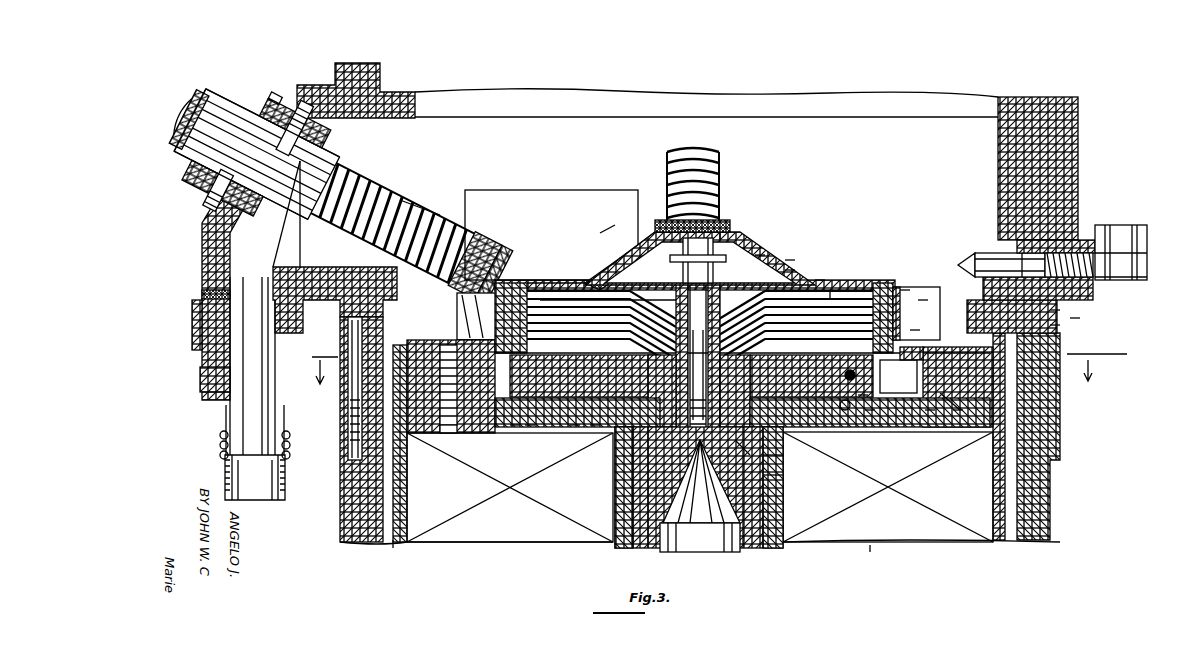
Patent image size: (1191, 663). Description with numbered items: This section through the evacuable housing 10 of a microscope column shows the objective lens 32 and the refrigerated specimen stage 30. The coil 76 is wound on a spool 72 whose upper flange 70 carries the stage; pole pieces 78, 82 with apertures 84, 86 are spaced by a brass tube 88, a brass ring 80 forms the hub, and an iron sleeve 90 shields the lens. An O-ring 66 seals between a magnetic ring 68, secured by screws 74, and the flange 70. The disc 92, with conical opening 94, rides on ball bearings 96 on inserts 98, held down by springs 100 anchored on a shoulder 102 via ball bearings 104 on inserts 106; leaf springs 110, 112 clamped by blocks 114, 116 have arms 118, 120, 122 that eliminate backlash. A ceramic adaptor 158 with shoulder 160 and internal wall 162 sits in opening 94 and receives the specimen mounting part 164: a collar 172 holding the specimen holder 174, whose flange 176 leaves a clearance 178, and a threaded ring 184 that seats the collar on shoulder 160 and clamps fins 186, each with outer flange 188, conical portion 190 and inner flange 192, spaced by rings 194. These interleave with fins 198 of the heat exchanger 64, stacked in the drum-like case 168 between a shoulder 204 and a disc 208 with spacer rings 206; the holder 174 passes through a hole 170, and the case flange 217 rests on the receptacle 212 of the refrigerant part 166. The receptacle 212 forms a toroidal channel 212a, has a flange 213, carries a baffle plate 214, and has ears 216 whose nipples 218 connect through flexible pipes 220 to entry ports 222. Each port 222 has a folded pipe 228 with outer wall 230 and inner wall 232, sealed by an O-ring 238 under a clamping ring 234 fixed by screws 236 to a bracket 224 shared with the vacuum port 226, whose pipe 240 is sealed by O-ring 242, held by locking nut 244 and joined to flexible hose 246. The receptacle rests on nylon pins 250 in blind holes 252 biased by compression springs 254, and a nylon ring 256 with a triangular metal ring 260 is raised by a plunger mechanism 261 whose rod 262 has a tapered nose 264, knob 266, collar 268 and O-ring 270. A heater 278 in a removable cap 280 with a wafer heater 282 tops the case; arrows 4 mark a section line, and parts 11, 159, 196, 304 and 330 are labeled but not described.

The evacuable housing 10 is at (340, 524).
The housing wall block 11 is at (1078, 120).
The specimen stage 30 is at (935, 144).
The objective lens 32 is at (888, 487).
The section line 4 is at (719, 380).
The heat exchanger 64 is at (870, 235).
The O-ring 66 is at (1060, 325).
The ring of magnetic material 68 is at (1080, 318).
The upper flange 70 is at (575, 430).
The spool 72 is at (783, 508).
The screws 74 is at (350, 452).
The coil 76 is at (872, 548).
The objective lens pole piece 78 is at (700, 537).
The ring of non-magnetic material 80 is at (783, 463).
The upper pole piece 82 is at (736, 451).
The aperture 84 is at (701, 481).
The aperture 86 is at (783, 480).
The cylindrical tube 88 is at (620, 495).
The sleeve 90 is at (395, 545).
The disc 92 is at (870, 395).
The conically tapering opening 94 is at (671, 355).
The ball bearings 96 is at (845, 405).
The inserts 98 is at (870, 410).
The hold-down springs 100 is at (880, 247).
The shoulder 102 is at (843, 255).
The ball bearings 104 is at (832, 410).
The hardened inserts 106 is at (862, 400).
The leaf spring 110 is at (959, 407).
The leaf spring 112 is at (455, 425).
The clamping block 114 is at (958, 410).
The clamping block 116 is at (515, 430).
The arm 118 is at (930, 410).
The arm 120 is at (530, 430).
The arm 122 is at (645, 400).
The adaptor 158 is at (440, 270).
The flange wall 159 is at (400, 285).
The shoulder 160 is at (400, 200).
The cylindrical internal wall 162 is at (796, 391).
The specimen mounting part 164 is at (760, 255).
The refrigerant part 166 is at (545, 290).
The case 168 is at (880, 320).
The hole 170 is at (600, 275).
The collar 172 is at (630, 262).
The specimen holder 174 is at (740, 245).
The flange 176 is at (592, 275).
The clearance 178 is at (726, 265).
The threaded ring 184 is at (595, 425).
The heat exchanger fins 186 is at (550, 282).
The outer flange portion 188 is at (840, 310).
The conical center portion 190 is at (820, 280).
The inner flange 192 is at (790, 270).
The spacer rings 194 is at (905, 290).
The fin end block 196 is at (920, 300).
The fins 198 is at (560, 300).
The shoulder 204 is at (515, 280).
The spacer rings 206 is at (482, 316).
The disc 208 is at (577, 395).
The receptacle 212 is at (916, 313).
The toroidal channel 212a is at (480, 270).
The flange 213 is at (482, 331).
The curved baffle plate 214 is at (562, 190).
The ears 216 is at (505, 230).
The flange 217 is at (915, 330).
The pipe nipples 218 is at (466, 209).
The flexible pipes 220 is at (396, 209).
The entry ports 222 is at (174, 98).
The bracket 224 is at (202, 228).
The vacuum port 226 is at (252, 500).
The pipe 228 is at (256, 154).
The outer wall 230 is at (164, 104).
The inner wall 232 is at (180, 105).
The clamping ring 234 is at (300, 112).
The screws 236 is at (229, 125).
The O-ring 238 is at (266, 134).
The pipe 240 is at (226, 418).
The O-ring 242 is at (196, 298).
The locking nut 244 is at (200, 381).
The flexible hose 246 is at (220, 446).
The cylindrical pins 250 is at (430, 430).
The blind holes 252 is at (446, 479).
The compression springs 254 is at (452, 433).
The cylindrical ring 256 is at (487, 220).
The metal ring 260 is at (965, 262).
The plunger mechanism 261 is at (1125, 225).
The rod 262 is at (1022, 255).
The tapered nose 264 is at (1000, 270).
The knob 266 is at (1140, 282).
The collar 268 is at (1040, 255).
The O-ring 270 is at (1017, 247).
The heater 278 is at (750, 240).
The removable cap 280 is at (790, 260).
The wafer type heater 282 is at (655, 225).
The cap edge 304 is at (605, 235).
The stem 330 is at (725, 235).